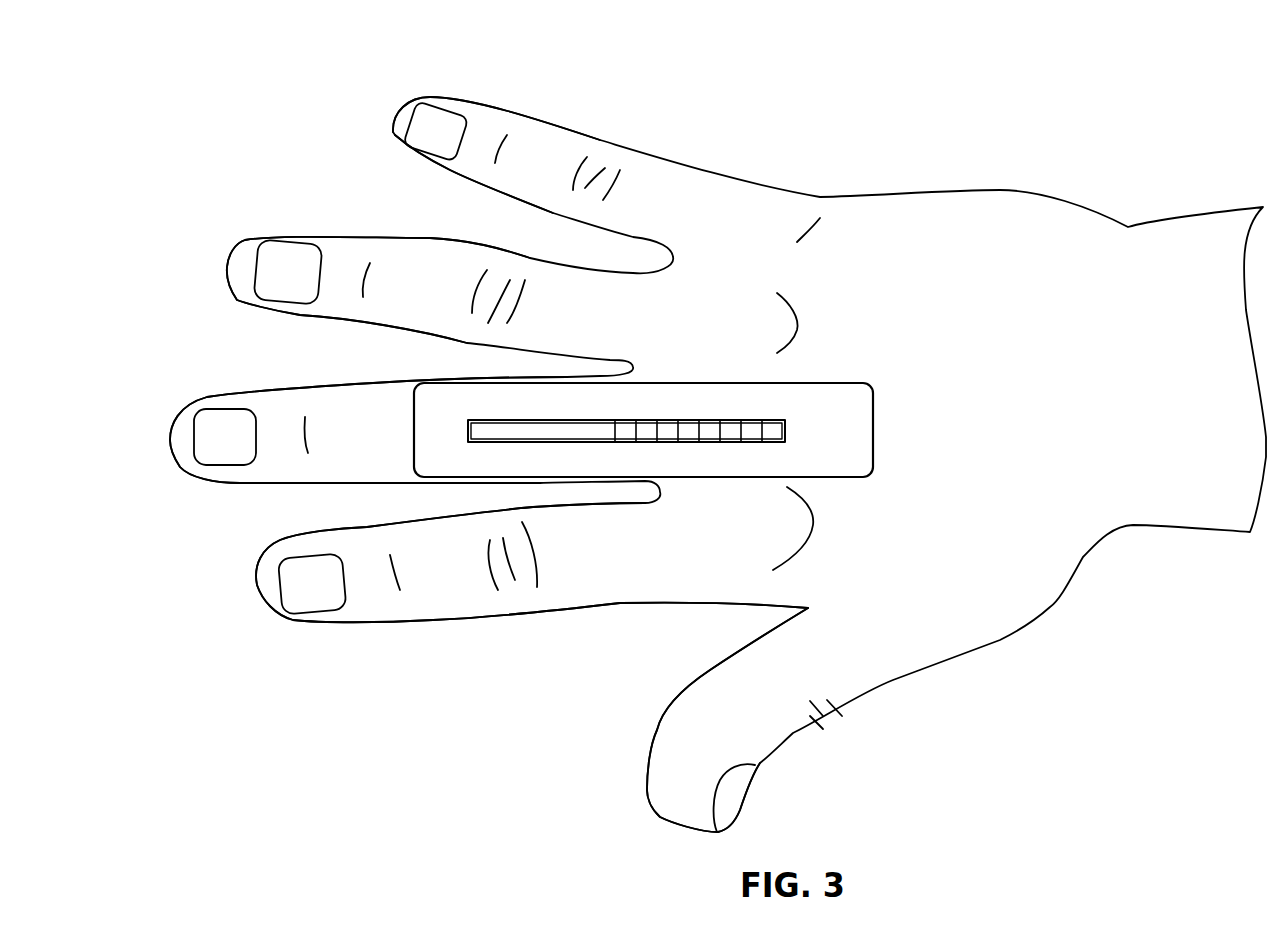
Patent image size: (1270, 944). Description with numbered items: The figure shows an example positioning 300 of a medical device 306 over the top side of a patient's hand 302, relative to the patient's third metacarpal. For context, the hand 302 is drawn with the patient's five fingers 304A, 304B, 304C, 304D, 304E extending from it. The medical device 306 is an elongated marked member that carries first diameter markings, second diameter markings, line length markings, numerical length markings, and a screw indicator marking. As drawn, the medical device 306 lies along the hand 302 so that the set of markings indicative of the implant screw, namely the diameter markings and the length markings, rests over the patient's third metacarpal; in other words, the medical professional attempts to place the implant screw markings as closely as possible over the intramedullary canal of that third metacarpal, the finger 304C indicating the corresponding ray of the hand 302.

The positioning 300 is at (197, 92).
The hand 302 is at (1025, 193).
The finger 304A is at (403, 108).
The finger 304B is at (250, 240).
The finger 304C is at (182, 402).
The finger 304D is at (262, 600).
The finger 304E is at (660, 822).
The medical device 306 is at (872, 432).